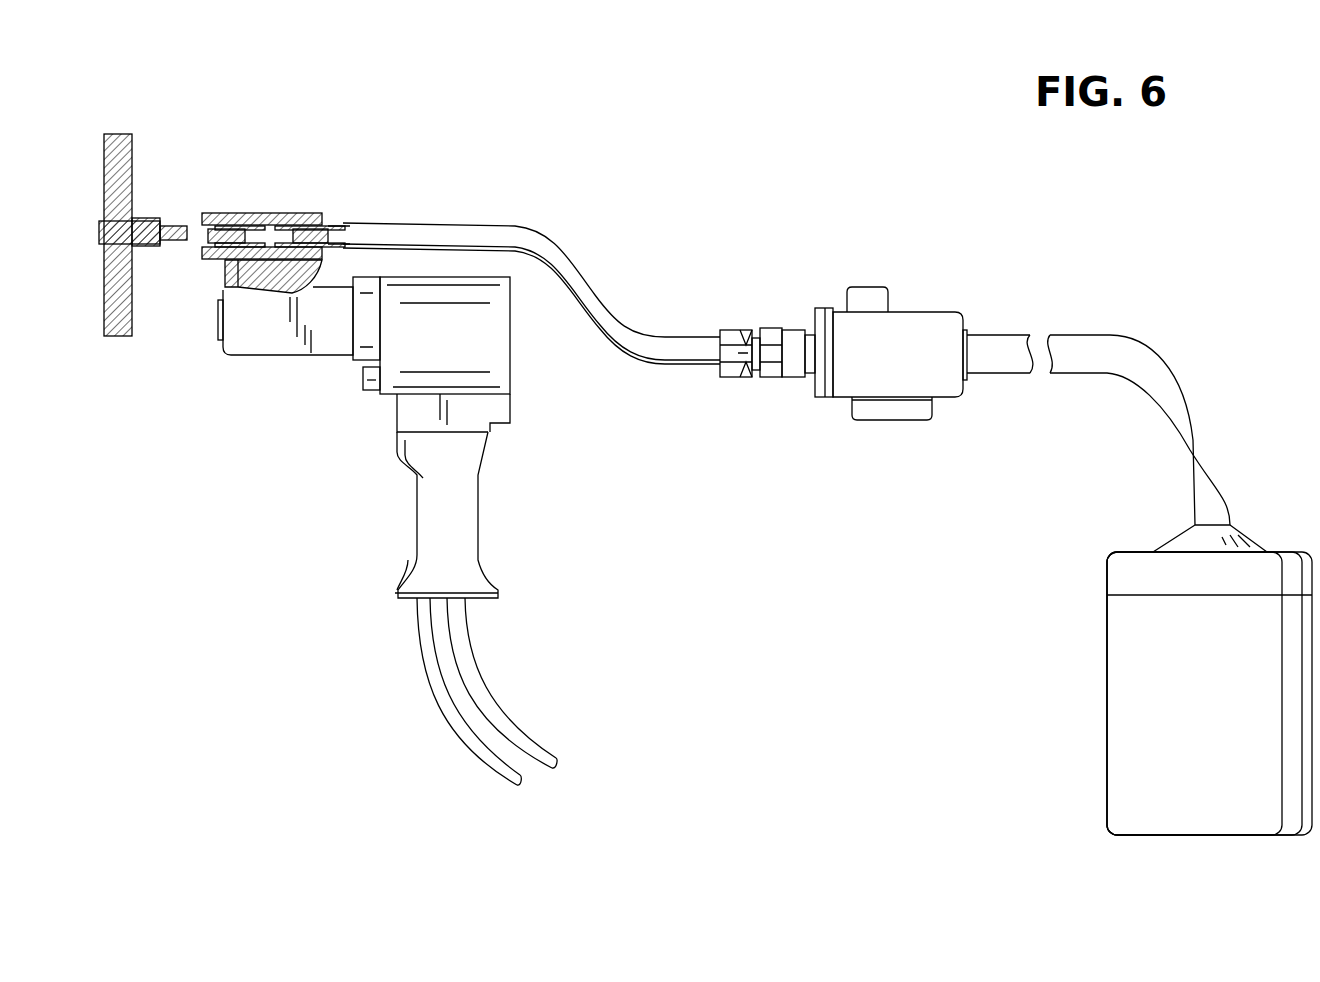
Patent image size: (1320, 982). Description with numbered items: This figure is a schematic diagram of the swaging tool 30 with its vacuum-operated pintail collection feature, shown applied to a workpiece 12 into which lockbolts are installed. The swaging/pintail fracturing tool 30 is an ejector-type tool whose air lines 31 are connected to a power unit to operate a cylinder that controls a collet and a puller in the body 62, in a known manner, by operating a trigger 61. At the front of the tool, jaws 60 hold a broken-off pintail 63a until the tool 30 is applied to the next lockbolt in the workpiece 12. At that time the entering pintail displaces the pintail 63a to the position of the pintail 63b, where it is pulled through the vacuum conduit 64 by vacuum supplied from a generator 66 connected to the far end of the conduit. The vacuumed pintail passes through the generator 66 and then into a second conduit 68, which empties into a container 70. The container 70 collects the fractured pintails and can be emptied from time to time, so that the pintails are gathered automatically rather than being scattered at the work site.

The workpiece 12 is at (135, 168).
The swaging tool 30 is at (513, 364).
The air lines 31 is at (462, 650).
The jaws 60 is at (228, 265).
The trigger 61 is at (358, 383).
The body 62 is at (283, 340).
The broken-off pintail 63a is at (233, 222).
The displaced pintail 63b is at (328, 222).
The vacuum conduit 64 is at (560, 260).
The vacuum generator 66 is at (910, 338).
The second conduit 68 is at (1200, 436).
The container 70 is at (1140, 680).